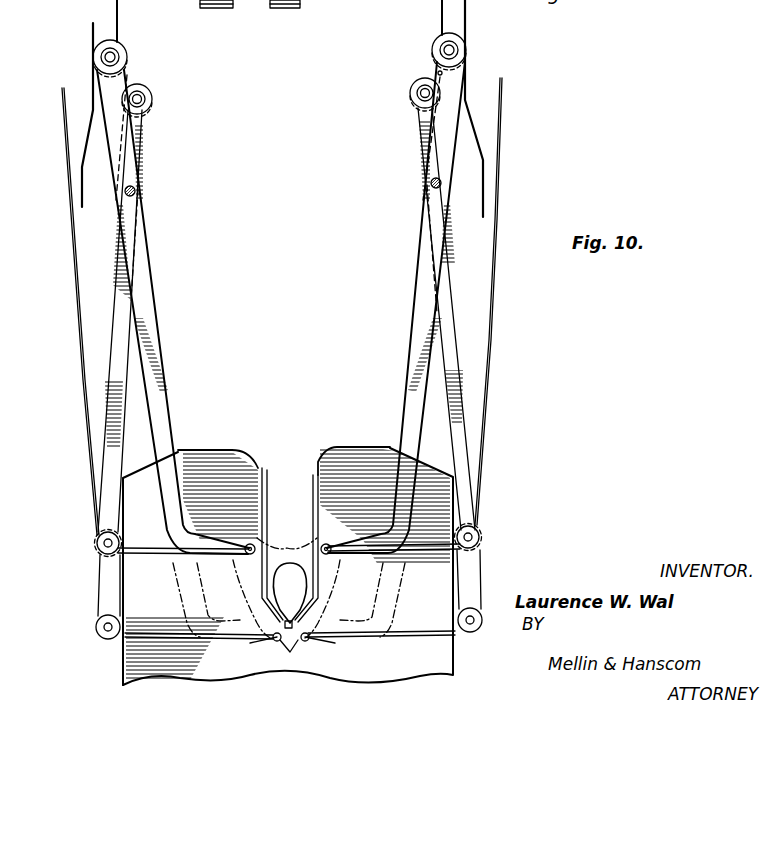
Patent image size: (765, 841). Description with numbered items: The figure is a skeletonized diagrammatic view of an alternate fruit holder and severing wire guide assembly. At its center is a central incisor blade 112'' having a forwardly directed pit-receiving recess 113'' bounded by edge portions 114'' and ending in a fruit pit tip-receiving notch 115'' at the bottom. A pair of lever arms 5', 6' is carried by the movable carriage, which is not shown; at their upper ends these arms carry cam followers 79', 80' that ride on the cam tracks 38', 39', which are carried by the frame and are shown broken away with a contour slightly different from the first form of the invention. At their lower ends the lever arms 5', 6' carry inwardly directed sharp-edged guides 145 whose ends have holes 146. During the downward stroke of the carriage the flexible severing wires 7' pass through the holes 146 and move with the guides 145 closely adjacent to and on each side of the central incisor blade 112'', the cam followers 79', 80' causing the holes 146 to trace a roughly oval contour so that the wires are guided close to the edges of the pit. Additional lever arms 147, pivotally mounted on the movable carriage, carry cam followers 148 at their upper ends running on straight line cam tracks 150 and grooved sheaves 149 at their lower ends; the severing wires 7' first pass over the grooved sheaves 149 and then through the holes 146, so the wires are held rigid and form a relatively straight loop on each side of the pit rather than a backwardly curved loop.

The straight line cam tracks 150 is at (117, 19).
The cam track 38' is at (57, 115).
The cam track 39' is at (505, 108).
The cam follower 79' is at (137, 58).
The cam follower 80' is at (419, 51).
The cam followers 148 is at (153, 99).
The additional lever arms 147 is at (118, 315).
The lever arm 5' is at (173, 312).
The lever arm 6' is at (396, 307).
The flexible severing wires 7' is at (279, 371).
The grooved sheaves 149 is at (96, 547).
The sharp-edged guides 145 is at (227, 542).
The holes 146 is at (252, 552).
The central incisor blade 112'' is at (288, 532).
The edge portions 114'' is at (284, 441).
The pit-receiving recess 113'' is at (290, 545).
The fruit pit tip-receiving notch 115'' is at (318, 595).